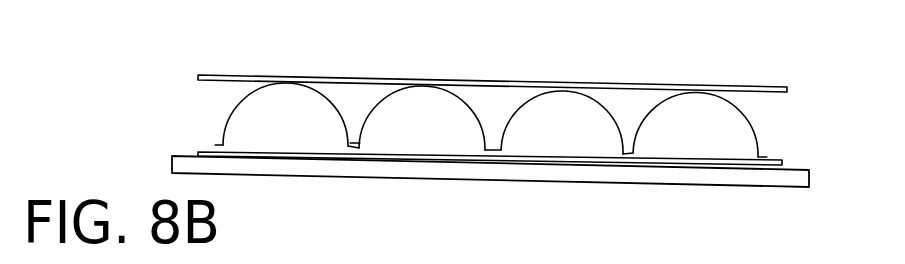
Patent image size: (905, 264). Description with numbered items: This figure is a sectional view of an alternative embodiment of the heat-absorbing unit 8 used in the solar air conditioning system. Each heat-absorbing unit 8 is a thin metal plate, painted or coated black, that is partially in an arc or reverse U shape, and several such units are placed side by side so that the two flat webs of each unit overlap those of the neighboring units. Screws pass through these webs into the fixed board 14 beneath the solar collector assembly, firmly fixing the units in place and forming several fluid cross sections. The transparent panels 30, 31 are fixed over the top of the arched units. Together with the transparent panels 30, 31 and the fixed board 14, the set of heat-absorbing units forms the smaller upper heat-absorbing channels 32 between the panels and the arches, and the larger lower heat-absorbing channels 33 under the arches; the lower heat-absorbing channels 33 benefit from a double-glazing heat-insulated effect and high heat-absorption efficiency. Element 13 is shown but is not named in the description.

The heat-absorbing unit 8 is at (492, 116).
The transparent panel 30 is at (492, 46).
The transparent panel 31 is at (422, 78).
The upper heat-absorbing channel 32 is at (360, 108).
The lower heat-absorbing channel 33 is at (445, 128).
The substrate layer 13 is at (783, 167).
The fixed board 14 is at (632, 172).